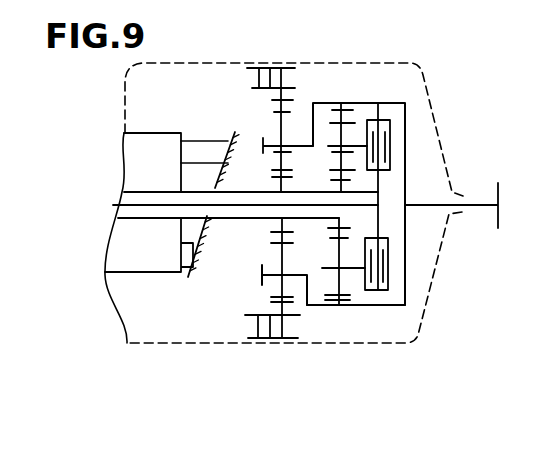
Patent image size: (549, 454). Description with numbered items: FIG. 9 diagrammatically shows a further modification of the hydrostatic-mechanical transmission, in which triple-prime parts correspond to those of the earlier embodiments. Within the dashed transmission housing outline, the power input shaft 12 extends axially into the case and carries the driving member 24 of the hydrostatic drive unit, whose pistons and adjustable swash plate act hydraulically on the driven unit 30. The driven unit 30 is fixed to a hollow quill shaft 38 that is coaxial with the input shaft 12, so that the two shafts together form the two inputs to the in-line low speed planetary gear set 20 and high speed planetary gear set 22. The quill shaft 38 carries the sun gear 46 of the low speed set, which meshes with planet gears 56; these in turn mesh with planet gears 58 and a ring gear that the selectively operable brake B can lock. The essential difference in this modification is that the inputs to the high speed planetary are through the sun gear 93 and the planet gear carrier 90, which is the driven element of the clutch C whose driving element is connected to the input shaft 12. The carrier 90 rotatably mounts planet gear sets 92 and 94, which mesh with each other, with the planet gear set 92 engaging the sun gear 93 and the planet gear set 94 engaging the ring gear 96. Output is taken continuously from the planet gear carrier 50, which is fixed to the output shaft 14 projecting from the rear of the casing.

The driven unit 30 is at (151, 142).
The driving member 24 is at (230, 137).
The brake B is at (297, 75).
The low speed planetary gear set 20 is at (304, 91).
The planet gears 56 is at (275, 125).
The sun gear 46 is at (273, 183).
The planet gear carrier 90 is at (383, 108).
The planet gear set 92 is at (343, 128).
The high speed planetary gear set 22 is at (362, 108).
The sun gear 93 is at (343, 182).
The clutch C is at (392, 132).
The output shaft 14 is at (482, 204).
The power input shaft 12 is at (162, 218).
The quill shaft 38 is at (225, 218).
The planet gears 58 is at (261, 262).
The planet gear carrier 50 is at (320, 310).
The planet gear set 94 is at (336, 253).
The ring gear 96 is at (347, 307).